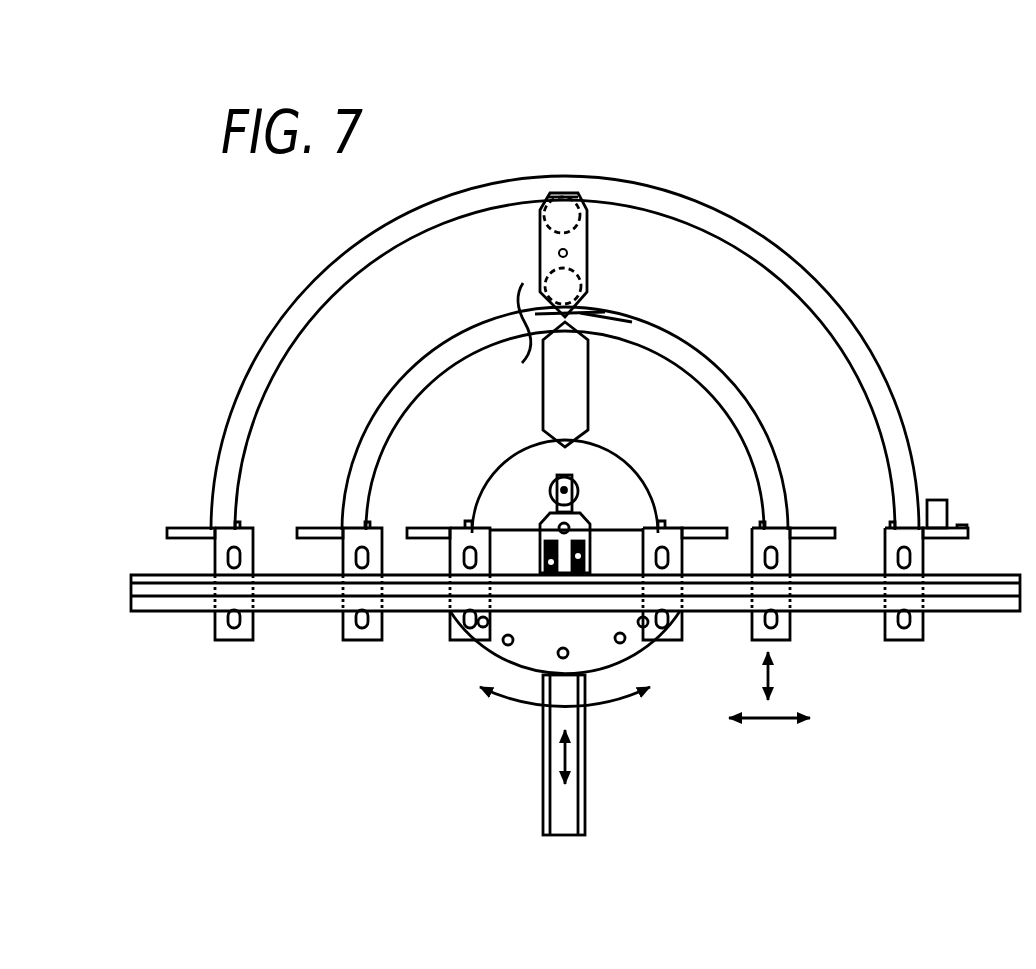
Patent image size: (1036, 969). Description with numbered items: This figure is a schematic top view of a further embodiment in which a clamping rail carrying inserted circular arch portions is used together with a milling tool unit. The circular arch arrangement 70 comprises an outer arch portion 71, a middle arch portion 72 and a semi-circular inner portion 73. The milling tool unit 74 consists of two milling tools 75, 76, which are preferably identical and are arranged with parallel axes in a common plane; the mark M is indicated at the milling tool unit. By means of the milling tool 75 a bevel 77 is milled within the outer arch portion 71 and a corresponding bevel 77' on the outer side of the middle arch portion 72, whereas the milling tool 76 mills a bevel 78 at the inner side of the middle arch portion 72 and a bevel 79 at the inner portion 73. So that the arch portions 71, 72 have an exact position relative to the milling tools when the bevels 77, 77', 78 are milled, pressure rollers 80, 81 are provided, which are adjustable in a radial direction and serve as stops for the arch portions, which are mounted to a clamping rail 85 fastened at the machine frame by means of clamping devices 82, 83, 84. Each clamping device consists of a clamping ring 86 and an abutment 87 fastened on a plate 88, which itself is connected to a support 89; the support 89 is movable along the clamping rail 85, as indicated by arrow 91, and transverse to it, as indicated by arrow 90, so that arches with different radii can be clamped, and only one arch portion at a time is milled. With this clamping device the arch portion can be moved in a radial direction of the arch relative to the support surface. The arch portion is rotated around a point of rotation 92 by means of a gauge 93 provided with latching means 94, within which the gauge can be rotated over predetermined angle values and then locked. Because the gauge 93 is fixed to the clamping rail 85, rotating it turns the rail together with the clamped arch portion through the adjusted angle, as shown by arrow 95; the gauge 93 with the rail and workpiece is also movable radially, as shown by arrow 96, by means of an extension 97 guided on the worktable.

The circular arch arrangement 70 is at (814, 256).
The outer arch portion 71 is at (837, 323).
The middle arch portion 72 is at (733, 404).
The semi-circular inner portion 73 is at (635, 470).
The milling tool unit 74 is at (512, 322).
The milling tool 75 is at (592, 233).
The milling tool 76 is at (592, 396).
The bevel 77 is at (581, 218).
The bevel 77' is at (611, 281).
The bevel 78 is at (622, 318).
The bevel 79 is at (545, 436).
The pressure roller 80 is at (548, 200).
The pressure roller 81 is at (545, 278).
The clamping device 82 is at (924, 468).
The clamping device 83 is at (797, 520).
The clamping device 84 is at (685, 523).
The clamping rail 85 is at (965, 600).
The clamping ring 86 is at (937, 516).
The abutment 87 is at (890, 520).
The plate 88 is at (958, 536).
The support 89 is at (903, 640).
The arrow 90 is at (775, 672).
The arrow 91 is at (768, 726).
The point of rotation 92 is at (558, 529).
The gauge 93 is at (527, 648).
The latching means 94 is at (624, 644).
The arrow 95 is at (512, 705).
The arrow 96 is at (541, 764).
The extension 97 is at (586, 806).
The mark M is at (575, 252).